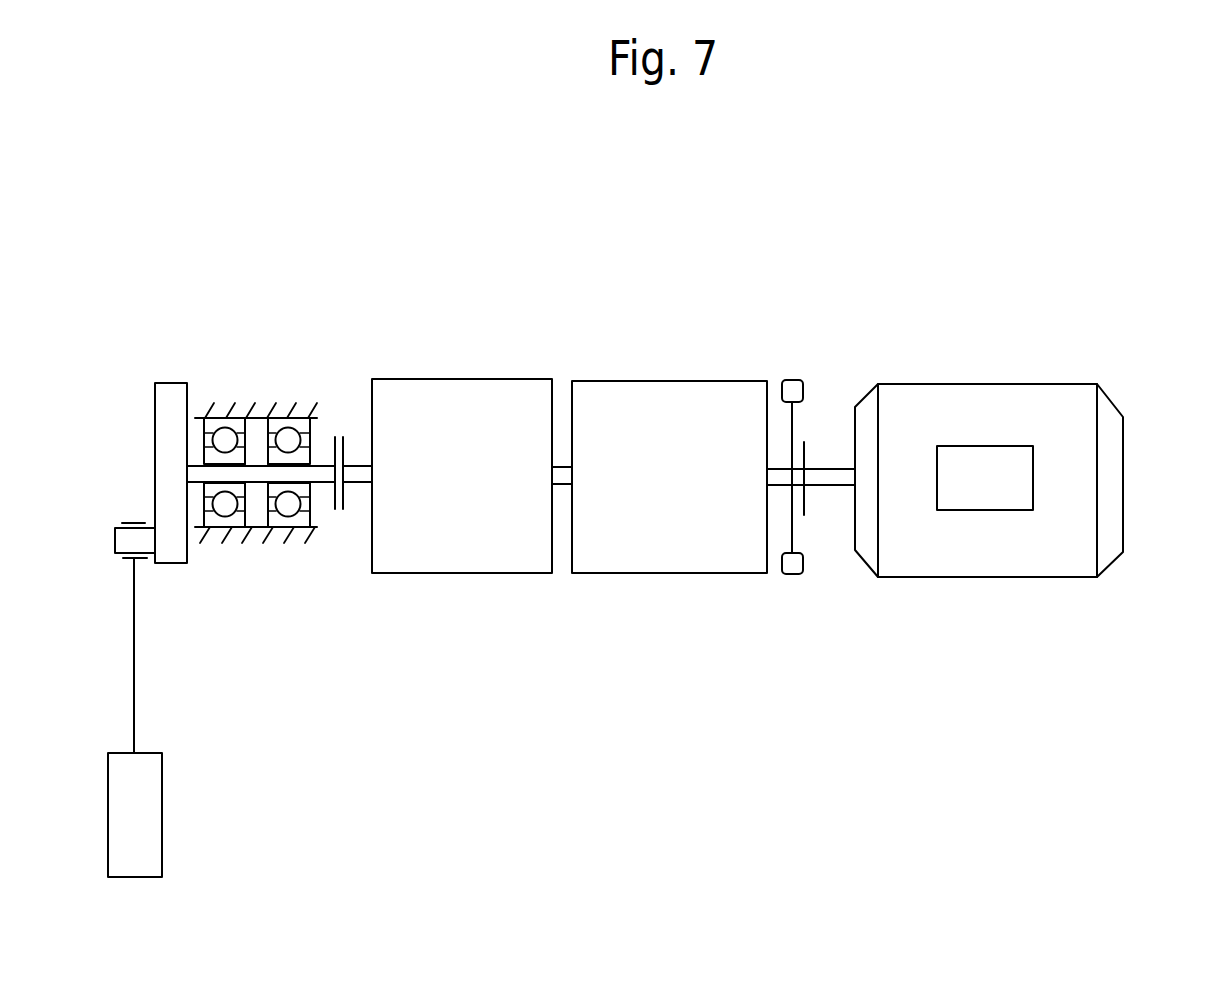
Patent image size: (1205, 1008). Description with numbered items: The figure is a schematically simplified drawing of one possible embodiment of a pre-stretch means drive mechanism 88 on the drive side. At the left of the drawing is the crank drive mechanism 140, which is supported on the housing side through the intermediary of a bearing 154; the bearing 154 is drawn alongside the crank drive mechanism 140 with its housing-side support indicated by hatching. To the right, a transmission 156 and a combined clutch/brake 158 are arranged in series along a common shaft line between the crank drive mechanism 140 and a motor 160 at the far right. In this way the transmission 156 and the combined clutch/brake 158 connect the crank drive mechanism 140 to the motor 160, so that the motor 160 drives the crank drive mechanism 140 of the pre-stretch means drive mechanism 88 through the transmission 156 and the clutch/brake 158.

The pre-stretch means drive mechanism 88 is at (400, 733).
The crank drive mechanism 140 is at (173, 390).
The bearing 154 is at (257, 537).
The transmission 156 is at (468, 403).
The combined clutch/brake 158 is at (675, 408).
The motor 160 is at (984, 410).